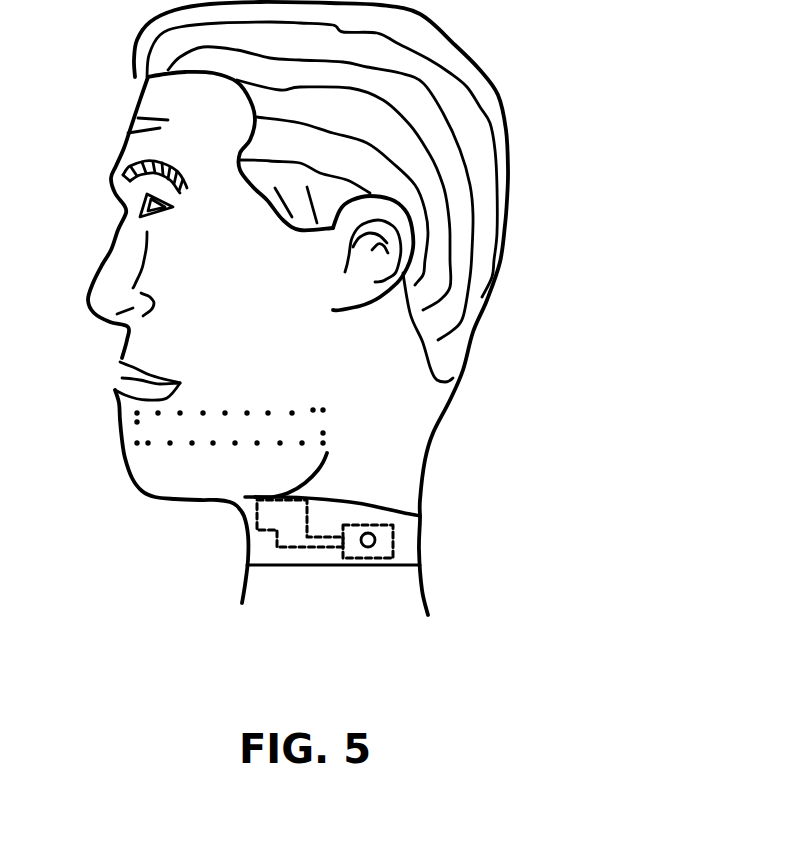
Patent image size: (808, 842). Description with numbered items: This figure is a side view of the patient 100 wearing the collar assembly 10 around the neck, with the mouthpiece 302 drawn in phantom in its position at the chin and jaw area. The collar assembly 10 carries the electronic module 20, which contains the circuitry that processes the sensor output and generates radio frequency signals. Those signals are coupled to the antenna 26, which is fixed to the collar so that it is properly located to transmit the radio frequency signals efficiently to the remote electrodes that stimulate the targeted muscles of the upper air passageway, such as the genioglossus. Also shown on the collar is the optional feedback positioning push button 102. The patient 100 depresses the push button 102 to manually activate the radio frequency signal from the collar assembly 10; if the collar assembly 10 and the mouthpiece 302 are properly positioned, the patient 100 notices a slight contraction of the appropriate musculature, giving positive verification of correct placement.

The patient 100 is at (678, 94).
The collar assembly 10 is at (412, 533).
The electronic module 20 is at (393, 542).
The antenna 26 is at (268, 518).
The feedback positioning push button 102 is at (363, 547).
The mouthpiece 302 is at (190, 422).